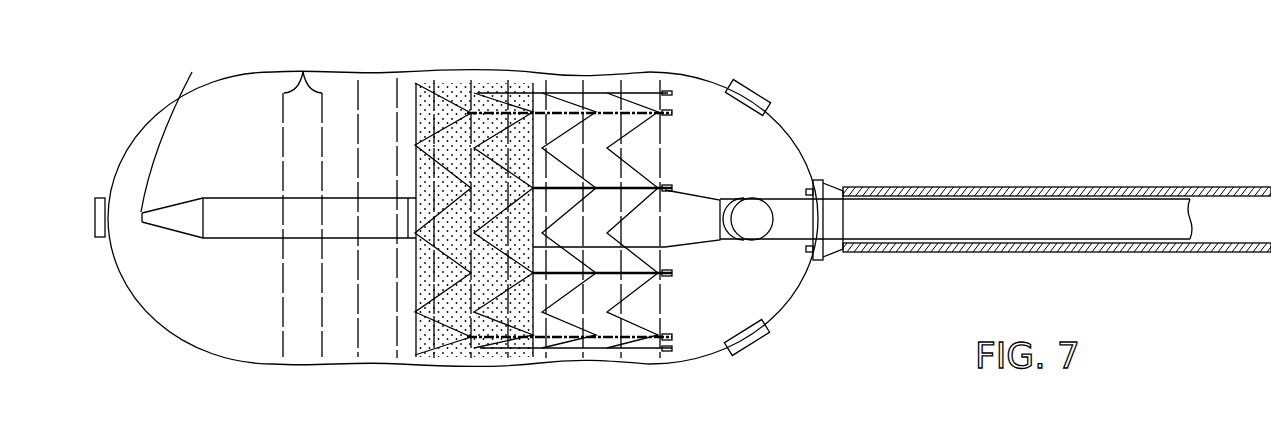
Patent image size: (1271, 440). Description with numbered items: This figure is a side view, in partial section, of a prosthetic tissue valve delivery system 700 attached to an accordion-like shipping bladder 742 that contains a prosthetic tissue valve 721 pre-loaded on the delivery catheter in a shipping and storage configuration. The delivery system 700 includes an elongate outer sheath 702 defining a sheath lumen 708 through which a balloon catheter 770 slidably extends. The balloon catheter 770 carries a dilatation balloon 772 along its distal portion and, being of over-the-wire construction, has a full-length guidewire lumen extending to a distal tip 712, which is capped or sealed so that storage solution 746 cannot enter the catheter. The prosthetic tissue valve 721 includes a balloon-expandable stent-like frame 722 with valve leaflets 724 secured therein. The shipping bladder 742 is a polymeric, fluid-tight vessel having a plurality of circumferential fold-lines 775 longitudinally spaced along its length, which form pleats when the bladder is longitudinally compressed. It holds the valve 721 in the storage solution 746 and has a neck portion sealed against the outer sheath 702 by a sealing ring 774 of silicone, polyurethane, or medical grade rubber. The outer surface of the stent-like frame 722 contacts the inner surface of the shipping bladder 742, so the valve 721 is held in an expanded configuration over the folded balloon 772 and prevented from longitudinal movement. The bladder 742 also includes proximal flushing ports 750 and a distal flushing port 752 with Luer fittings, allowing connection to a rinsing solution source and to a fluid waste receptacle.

The prosthetic tissue valve delivery system 700 is at (1022, 97).
The elongate outer sheath 702 is at (882, 188).
The sheath lumen 708 is at (1230, 205).
The distal tip 712 is at (192, 72).
The prosthetic tissue valve 721 is at (489, 91).
The stent-like frame 722 is at (572, 293).
The valve leaflets 724 is at (472, 345).
The accordion-like shipping bladder 742 is at (339, 367).
The storage solution 746 is at (338, 112).
The proximal flushing ports 750 is at (749, 92).
The distal flushing port 752 is at (96, 218).
The balloon catheter 770 is at (1040, 232).
The dilatation balloon 772 is at (455, 238).
The sealing ring 774 is at (832, 262).
The circumferential fold-lines 775 is at (303, 72).